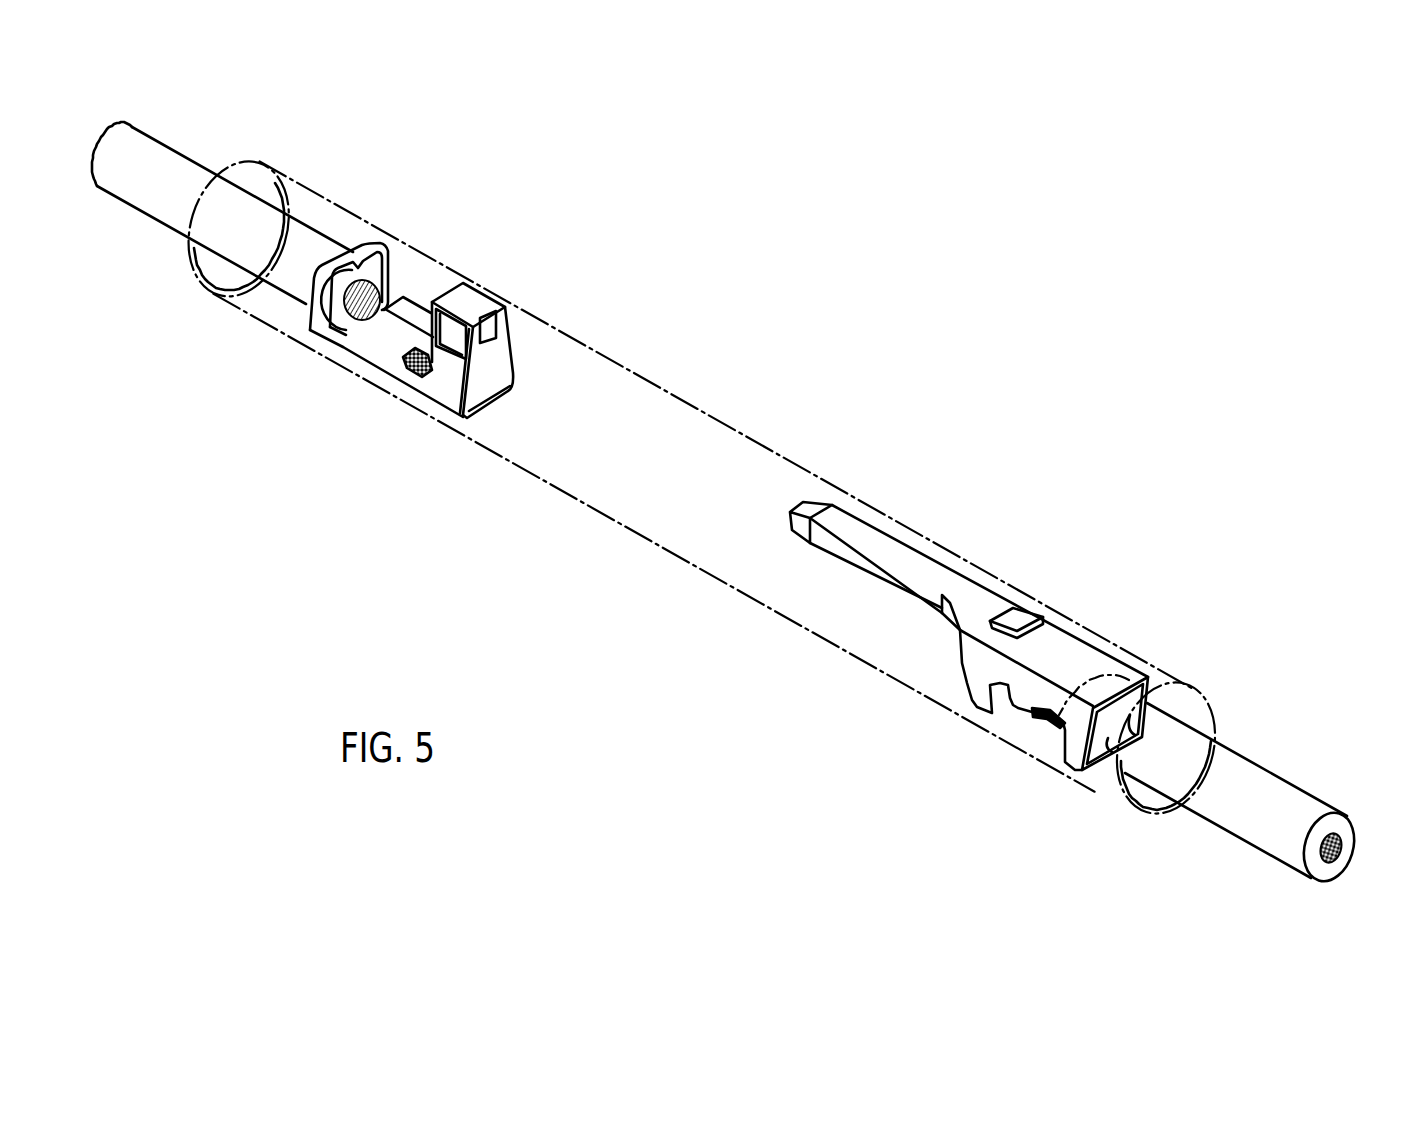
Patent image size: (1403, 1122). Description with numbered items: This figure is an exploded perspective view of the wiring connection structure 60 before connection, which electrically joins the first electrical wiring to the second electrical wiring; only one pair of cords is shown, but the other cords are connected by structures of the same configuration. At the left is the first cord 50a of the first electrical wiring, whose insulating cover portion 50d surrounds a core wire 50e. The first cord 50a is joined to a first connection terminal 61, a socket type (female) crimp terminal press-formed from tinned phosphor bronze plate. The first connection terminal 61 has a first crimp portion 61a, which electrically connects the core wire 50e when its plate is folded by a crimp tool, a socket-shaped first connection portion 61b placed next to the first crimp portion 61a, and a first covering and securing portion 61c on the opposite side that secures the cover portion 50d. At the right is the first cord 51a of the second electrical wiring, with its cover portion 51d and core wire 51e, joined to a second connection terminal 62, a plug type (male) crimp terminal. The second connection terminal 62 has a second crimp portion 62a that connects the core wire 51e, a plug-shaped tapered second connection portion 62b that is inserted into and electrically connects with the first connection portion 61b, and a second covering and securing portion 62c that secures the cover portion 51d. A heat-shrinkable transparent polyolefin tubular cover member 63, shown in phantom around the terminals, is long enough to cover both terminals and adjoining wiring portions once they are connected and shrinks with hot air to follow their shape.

The first cord 50a is at (190, 148).
The cover portion 50d is at (282, 298).
The core wire 50e is at (343, 330).
The first cord 51a is at (1275, 775).
The cover portion 51d is at (1222, 750).
The core wire 51e is at (1338, 855).
The wiring connection structure 60 is at (843, 278).
The first connection terminal 61 is at (487, 297).
The first crimp portion 61a is at (403, 303).
The first connection portion 61b is at (520, 334).
The first covering and securing portion 61c is at (370, 247).
The second connection terminal 62 is at (1063, 630).
The second crimp portion 62a is at (1015, 715).
The second connection portion 62b is at (940, 606).
The second covering and securing portion 62c is at (1075, 755).
The cover member 63 is at (757, 437).